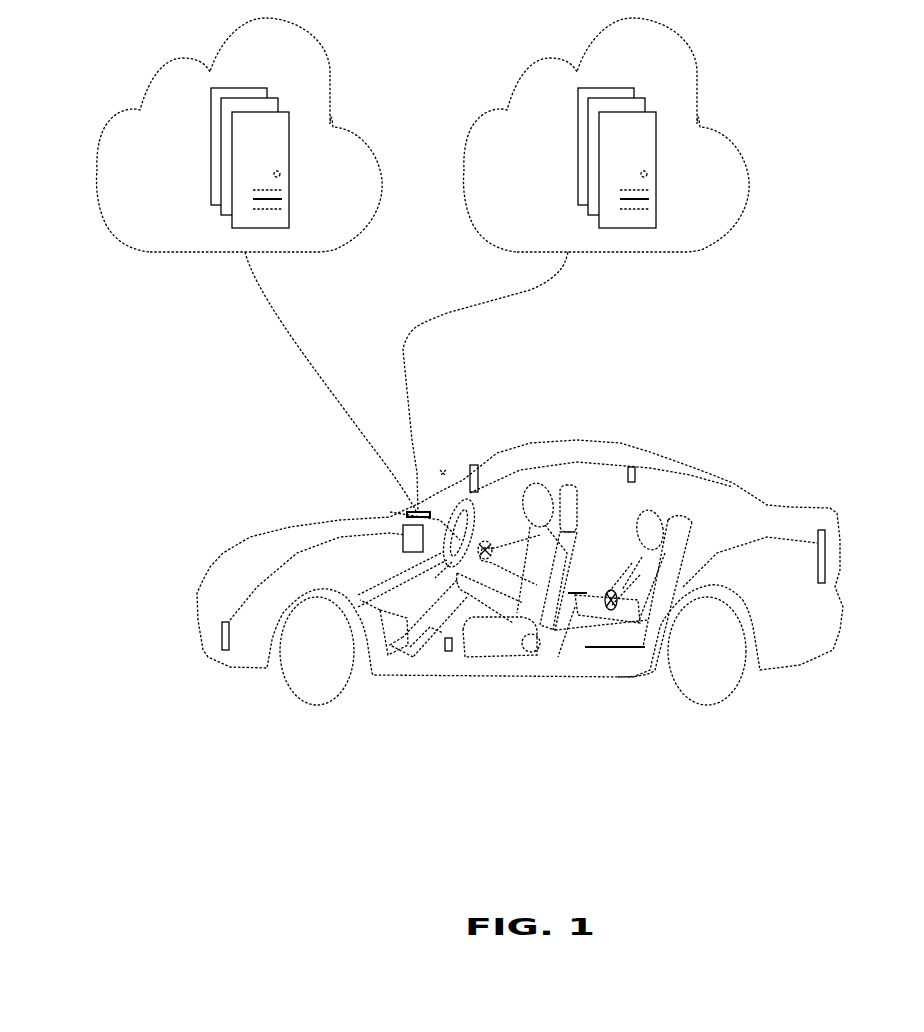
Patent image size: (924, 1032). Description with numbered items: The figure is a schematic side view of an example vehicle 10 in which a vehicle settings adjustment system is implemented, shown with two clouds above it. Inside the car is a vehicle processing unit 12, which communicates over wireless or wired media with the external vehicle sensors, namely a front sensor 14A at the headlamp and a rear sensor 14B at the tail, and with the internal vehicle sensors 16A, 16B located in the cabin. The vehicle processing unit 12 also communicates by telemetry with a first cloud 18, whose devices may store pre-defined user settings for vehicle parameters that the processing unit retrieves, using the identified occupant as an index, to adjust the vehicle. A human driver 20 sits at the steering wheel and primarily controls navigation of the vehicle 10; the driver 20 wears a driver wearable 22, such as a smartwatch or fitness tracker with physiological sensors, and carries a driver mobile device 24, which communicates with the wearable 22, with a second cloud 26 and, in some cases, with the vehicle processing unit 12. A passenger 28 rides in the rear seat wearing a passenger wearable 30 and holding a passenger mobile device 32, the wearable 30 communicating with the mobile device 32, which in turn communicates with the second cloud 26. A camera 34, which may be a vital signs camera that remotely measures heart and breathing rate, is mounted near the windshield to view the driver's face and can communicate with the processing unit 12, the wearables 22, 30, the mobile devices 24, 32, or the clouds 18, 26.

The vehicle 10 is at (278, 530).
The vehicle processing unit 12 is at (403, 538).
The front external vehicle sensor 14A is at (222, 650).
The rear external vehicle sensor 14B is at (825, 563).
The internal vehicle sensor 16A is at (637, 470).
The internal vehicle sensor 16B is at (443, 652).
The cloud 18 is at (172, 215).
The driver 20 is at (542, 480).
The driver wearable 22 is at (481, 560).
The driver mobile device 24 is at (417, 513).
The cloud 26 is at (547, 198).
The passenger 28 is at (650, 508).
The passenger wearable 30 is at (615, 607).
The passenger mobile device 32 is at (600, 557).
The camera 34 is at (493, 460).